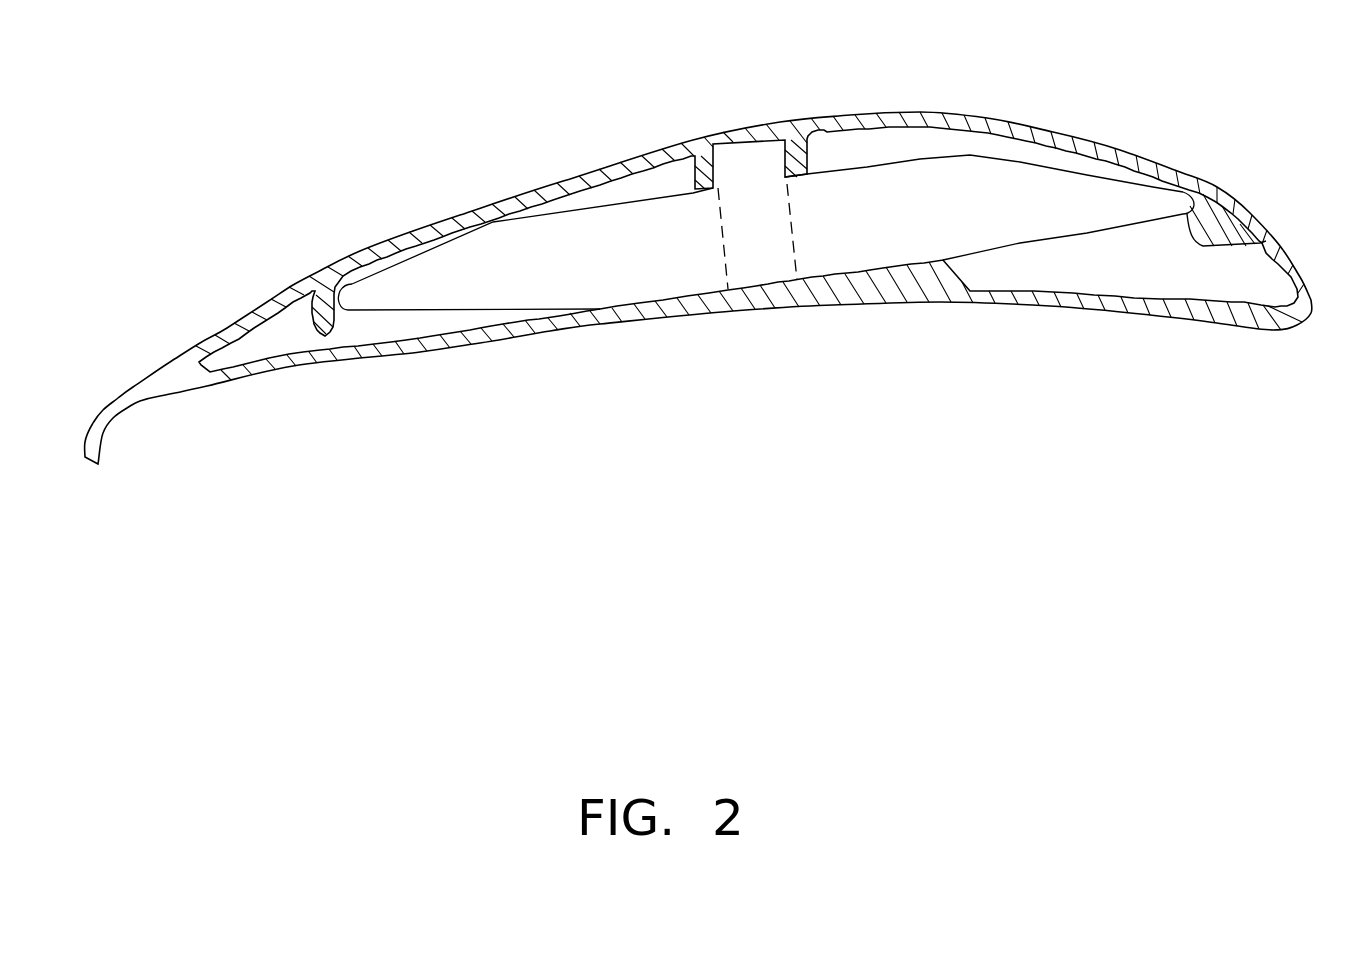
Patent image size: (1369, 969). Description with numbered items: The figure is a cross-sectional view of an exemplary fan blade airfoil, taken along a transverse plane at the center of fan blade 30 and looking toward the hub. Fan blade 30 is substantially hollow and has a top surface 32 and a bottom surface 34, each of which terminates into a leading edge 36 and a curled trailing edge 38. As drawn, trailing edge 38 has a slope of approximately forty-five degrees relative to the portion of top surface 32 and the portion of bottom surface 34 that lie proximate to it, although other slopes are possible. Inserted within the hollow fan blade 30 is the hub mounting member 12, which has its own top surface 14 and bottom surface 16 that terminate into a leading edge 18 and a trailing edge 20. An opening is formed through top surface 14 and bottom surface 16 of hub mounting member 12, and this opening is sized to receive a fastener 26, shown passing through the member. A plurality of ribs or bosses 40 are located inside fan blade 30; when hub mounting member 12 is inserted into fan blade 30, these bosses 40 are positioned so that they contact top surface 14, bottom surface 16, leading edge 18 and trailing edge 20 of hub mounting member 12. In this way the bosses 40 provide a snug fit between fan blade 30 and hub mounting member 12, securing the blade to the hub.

The hub mounting member 12 is at (647, 263).
The top surface 14 is at (865, 167).
The bottom surface 16 is at (1078, 243).
The leading edge 18 is at (1193, 202).
The trailing edge 20 is at (310, 300).
The fastener 26 is at (742, 167).
The fan blade 30 is at (303, 78).
The top surface 32 is at (567, 178).
The bottom surface 34 is at (840, 304).
The leading edge 36 is at (1317, 315).
The curled trailing edge 38 is at (92, 467).
The ribs or bosses 40 is at (812, 148).